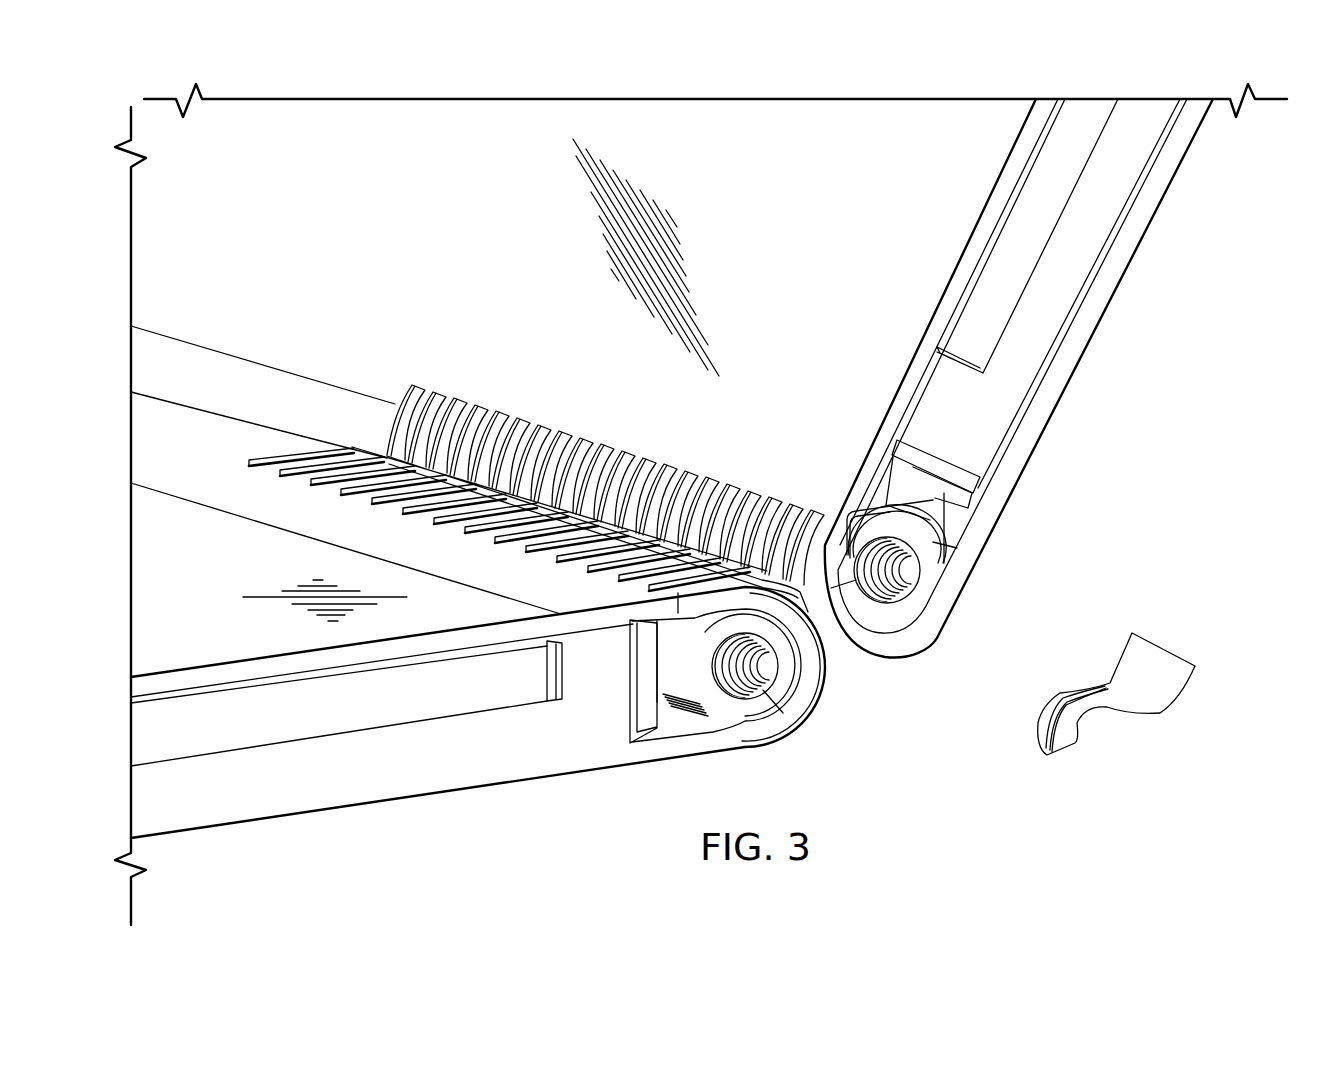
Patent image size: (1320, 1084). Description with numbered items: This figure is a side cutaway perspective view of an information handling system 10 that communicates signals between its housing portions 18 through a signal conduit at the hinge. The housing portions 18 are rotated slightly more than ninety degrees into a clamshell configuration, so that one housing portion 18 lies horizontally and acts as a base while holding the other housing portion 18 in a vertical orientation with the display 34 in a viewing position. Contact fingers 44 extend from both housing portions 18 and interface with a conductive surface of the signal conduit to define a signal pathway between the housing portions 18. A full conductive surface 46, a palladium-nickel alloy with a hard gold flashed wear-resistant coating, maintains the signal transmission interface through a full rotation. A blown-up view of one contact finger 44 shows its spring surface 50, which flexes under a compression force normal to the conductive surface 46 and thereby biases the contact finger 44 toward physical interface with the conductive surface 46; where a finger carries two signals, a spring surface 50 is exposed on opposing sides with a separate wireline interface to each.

The information handling system 10 is at (1144, 438).
The housing portions 18 is at (923, 650).
The display 34 is at (182, 597).
The contact finger 44 is at (947, 510).
The full conductive surface 46 is at (787, 682).
The spring surface 50 is at (1063, 690).